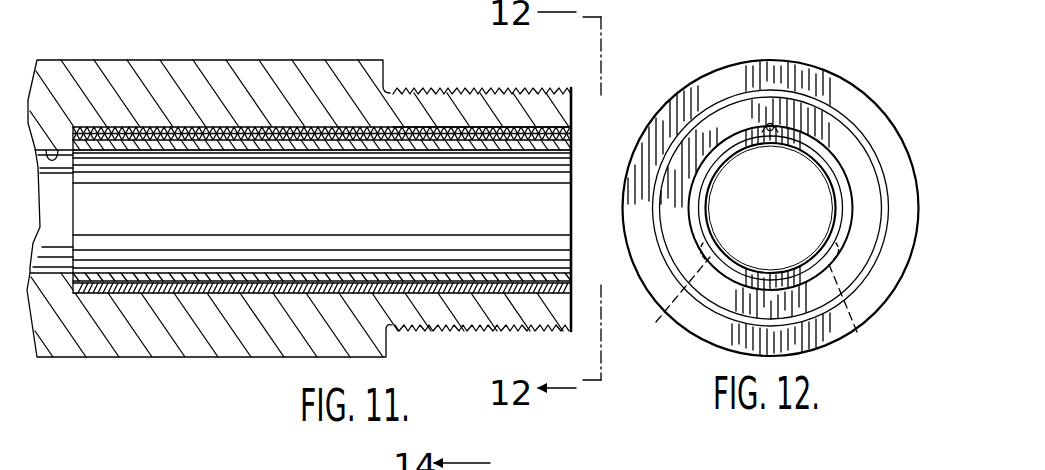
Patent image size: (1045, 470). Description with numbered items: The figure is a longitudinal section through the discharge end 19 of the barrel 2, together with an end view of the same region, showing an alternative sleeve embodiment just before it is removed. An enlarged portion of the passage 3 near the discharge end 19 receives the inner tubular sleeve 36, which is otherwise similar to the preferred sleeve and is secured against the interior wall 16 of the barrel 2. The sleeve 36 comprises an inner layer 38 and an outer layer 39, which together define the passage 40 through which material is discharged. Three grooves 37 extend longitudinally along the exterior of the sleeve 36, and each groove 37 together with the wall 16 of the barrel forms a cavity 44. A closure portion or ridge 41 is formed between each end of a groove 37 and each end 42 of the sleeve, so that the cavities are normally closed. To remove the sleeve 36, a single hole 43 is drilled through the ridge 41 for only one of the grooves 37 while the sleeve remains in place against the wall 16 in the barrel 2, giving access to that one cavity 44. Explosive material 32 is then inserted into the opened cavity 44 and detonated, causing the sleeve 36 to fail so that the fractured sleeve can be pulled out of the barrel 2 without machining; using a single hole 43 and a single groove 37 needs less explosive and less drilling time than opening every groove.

In FIG. 11, the barrel 2 is at (299, 187).
In FIG. 12, the barrel 2 is at (714, 63).
In FIG. 11, the passage 3 is at (48, 150).
In FIG. 11, the interior wall 16 is at (118, 128).
In FIG. 11, the discharge end 19 is at (298, 82).
In FIG. 11, the explosive material 32 is at (507, 128).
In FIG. 11, the sleeve 36 is at (178, 140).
In FIG. 12, the sleeve 36 is at (812, 132).
In FIG. 11, the grooves 37 is at (230, 148).
In FIG. 12, the grooves 37 is at (757, 261).
In FIG. 11, the inner layer 38 is at (148, 283).
In FIG. 12, the inner layer 38 is at (712, 170).
In FIG. 11, the outer layer 39 is at (240, 282).
In FIG. 12, the outer layer 39 is at (697, 200).
In FIG. 11, the passage 40 is at (330, 150).
In FIG. 12, the passage 40 is at (733, 256).
In FIG. 12, the closure portion or ridge 41 is at (772, 124).
In FIG. 11, the end of the sleeve 42 is at (73, 203).
In FIG. 12, the end of the sleeve 42 is at (836, 172).
In FIG. 11, the single hole 43 is at (573, 128).
In FIG. 12, the single hole 43 is at (777, 130).
In FIG. 11, the cavity 44 is at (433, 127).